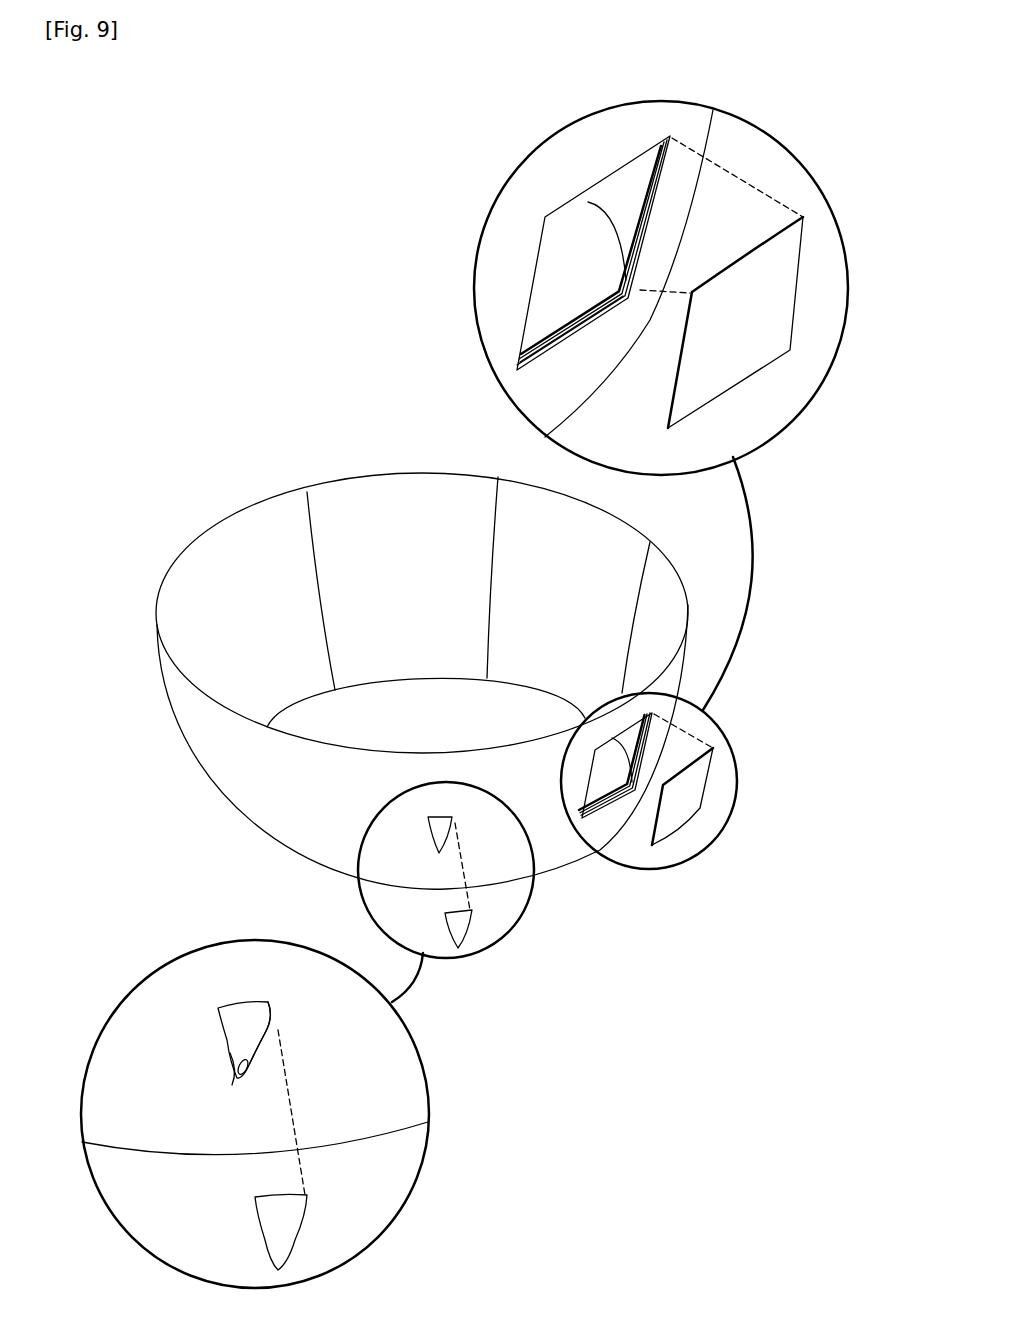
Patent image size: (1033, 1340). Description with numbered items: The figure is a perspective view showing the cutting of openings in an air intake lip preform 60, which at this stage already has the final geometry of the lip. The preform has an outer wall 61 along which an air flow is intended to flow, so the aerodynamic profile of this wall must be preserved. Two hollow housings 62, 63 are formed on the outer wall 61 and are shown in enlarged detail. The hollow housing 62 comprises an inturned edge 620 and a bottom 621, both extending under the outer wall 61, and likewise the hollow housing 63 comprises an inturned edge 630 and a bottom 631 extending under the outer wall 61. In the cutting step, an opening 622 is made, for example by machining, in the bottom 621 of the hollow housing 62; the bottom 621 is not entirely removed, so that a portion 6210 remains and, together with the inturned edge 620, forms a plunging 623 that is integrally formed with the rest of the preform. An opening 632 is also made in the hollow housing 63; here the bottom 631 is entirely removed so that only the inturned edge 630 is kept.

The air intake lip preform 60 is at (192, 490).
The outer wall 61 is at (212, 757).
The hollow housing 62 is at (523, 283).
The inturned edge 620 is at (658, 232).
The bottom 621 is at (733, 378).
The opening 622 is at (578, 298).
The plunging 623 is at (417, 345).
The portion 6210 is at (662, 141).
The hollow housing 63 is at (427, 823).
The inturned edge 630 is at (237, 1075).
The bottom 631 is at (450, 924).
The opening 632 is at (252, 1026).